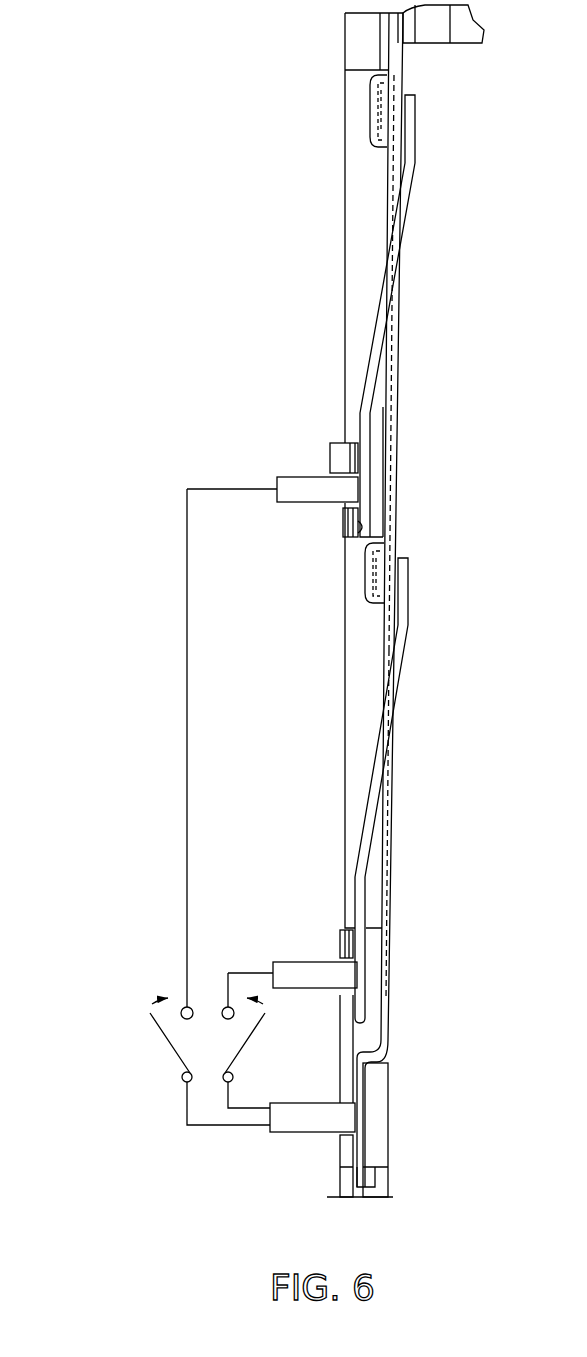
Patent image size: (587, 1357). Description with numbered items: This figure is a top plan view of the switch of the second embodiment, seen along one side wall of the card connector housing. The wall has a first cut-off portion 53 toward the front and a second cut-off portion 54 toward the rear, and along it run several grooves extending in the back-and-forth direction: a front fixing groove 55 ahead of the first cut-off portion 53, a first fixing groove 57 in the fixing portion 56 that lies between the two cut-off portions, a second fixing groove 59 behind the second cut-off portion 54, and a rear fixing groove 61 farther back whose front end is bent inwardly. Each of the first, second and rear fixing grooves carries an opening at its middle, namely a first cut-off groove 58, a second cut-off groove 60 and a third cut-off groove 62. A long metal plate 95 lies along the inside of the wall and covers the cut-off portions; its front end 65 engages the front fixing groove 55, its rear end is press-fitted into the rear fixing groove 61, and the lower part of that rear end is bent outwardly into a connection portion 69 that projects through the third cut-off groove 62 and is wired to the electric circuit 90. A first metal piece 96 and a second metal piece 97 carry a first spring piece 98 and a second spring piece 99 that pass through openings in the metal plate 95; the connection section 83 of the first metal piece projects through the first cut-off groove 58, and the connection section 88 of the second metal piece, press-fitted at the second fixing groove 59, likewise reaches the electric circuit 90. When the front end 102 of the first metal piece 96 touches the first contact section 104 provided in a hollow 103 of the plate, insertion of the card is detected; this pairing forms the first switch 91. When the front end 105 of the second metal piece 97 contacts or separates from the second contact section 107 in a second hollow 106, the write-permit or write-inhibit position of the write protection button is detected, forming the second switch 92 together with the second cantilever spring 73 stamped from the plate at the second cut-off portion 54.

The first cut-off portion 53 is at (345, 285).
The second cut-off portion 54 is at (343, 790).
The front fixing groove 55 is at (403, 22).
The fixing portion 56 is at (343, 525).
The first fixing groove 57 is at (357, 540).
The first cut-off groove 58 is at (325, 471).
The second fixing groove 59 is at (360, 975).
The second cut-off groove 60 is at (345, 931).
The rear fixing groove 61 is at (365, 1112).
The third cut-off groove 62 is at (340, 1135).
The front end 65 is at (398, 43).
The connection portion 69 is at (285, 1110).
The second cantilever spring 73 is at (397, 800).
The connection section 83 is at (280, 481).
The connection section 88 is at (290, 968).
The electric circuit 90 is at (183, 830).
The first switch 91 is at (276, 228).
The second switch 92 is at (297, 715).
The metal plate 95 is at (400, 494).
The first metal piece 96 is at (431, 316).
The second metal piece 97 is at (432, 790).
The first spring piece 98 is at (406, 206).
The second spring piece 99 is at (403, 655).
The front end 102 is at (413, 108).
The hollow 103 is at (393, 86).
The first contact section 104 is at (370, 122).
The front end 105 is at (408, 583).
The hollow 106 is at (382, 555).
The second contact section 107 is at (367, 590).